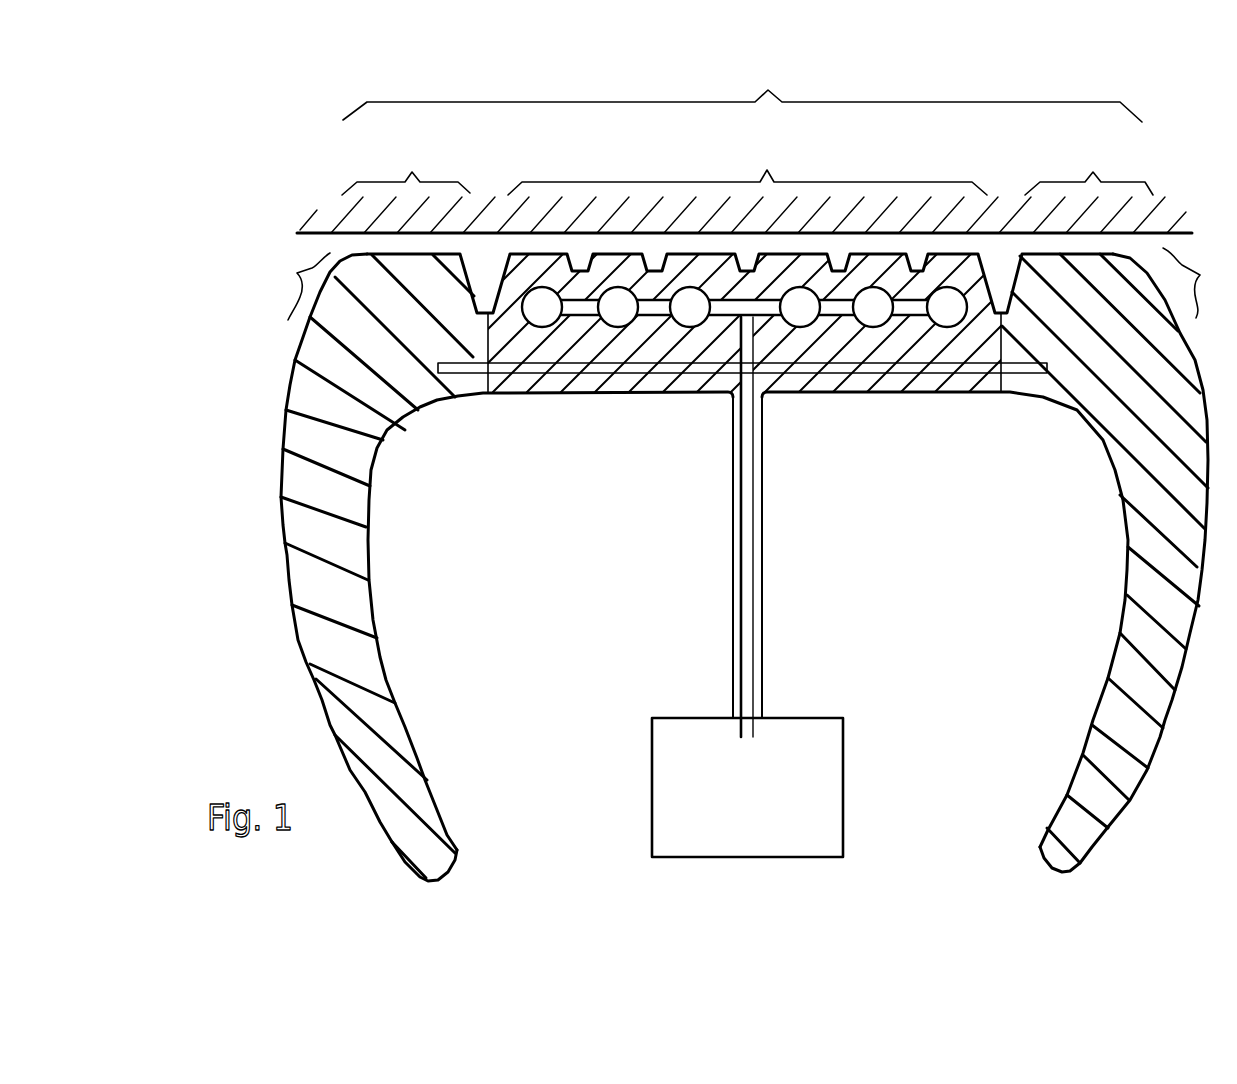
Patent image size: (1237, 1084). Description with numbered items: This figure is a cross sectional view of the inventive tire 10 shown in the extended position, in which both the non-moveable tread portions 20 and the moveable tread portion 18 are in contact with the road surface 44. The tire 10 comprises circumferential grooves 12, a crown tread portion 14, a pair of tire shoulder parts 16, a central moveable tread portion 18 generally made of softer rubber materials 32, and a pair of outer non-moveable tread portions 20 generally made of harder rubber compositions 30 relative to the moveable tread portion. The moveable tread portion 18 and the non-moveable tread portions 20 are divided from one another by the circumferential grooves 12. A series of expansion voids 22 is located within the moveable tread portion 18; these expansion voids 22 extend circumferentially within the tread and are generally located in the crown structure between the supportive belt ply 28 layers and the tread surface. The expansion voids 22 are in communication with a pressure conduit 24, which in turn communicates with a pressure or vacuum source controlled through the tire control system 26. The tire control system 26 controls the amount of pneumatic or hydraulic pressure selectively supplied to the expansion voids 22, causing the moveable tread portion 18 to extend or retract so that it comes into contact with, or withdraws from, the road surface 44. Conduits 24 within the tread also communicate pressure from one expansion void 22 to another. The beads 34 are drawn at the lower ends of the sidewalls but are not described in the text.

The tire 10 is at (380, 658).
The circumferential grooves 12 is at (580, 253).
The crown tread portion 14 is at (742, 90).
The tire shoulder parts 16 is at (747, 284).
The moveable tread portion 18 is at (747, 168).
The non-moveable tread portions 20 is at (747, 169).
The expansion voids 22 is at (540, 328).
The pressure conduit 24 is at (845, 318).
The tire control system 26 is at (653, 815).
The supportive belt ply 28 is at (513, 368).
The harder rubber compositions 30 is at (377, 357).
The softer rubber materials 32 is at (655, 350).
The bead 34 is at (413, 878).
The road surface 44 is at (332, 234).